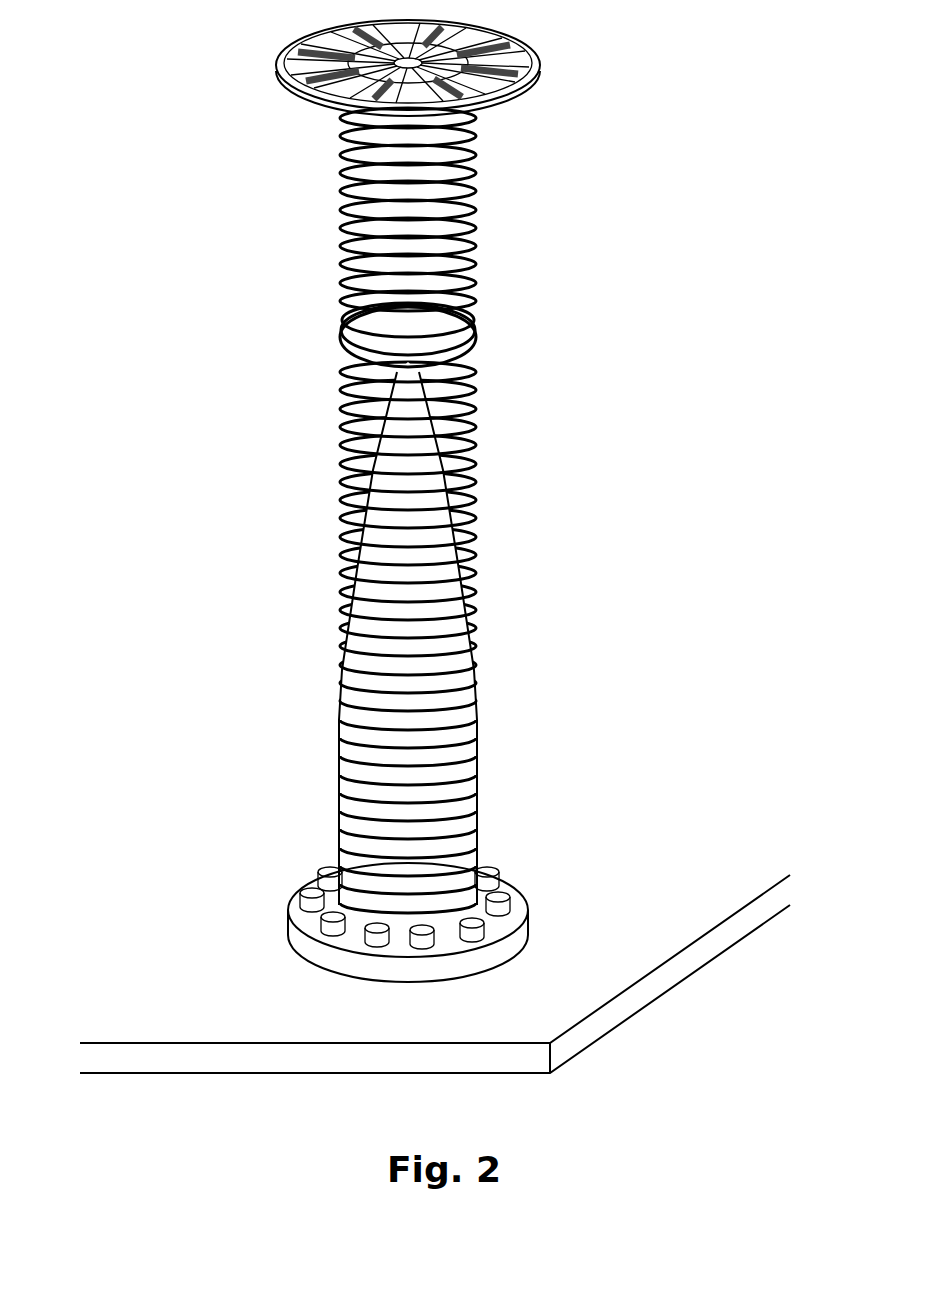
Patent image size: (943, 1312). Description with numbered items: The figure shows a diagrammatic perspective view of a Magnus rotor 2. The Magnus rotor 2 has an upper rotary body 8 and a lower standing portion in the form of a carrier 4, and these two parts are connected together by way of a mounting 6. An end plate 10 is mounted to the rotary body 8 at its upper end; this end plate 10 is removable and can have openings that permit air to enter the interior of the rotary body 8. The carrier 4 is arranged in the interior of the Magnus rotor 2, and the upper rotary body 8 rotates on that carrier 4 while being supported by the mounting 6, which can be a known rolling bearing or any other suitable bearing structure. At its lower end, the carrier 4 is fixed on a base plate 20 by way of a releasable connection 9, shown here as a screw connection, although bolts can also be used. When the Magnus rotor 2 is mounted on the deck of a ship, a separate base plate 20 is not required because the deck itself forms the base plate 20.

The Magnus rotor 2 is at (600, 144).
The carrier 4 is at (447, 593).
The mounting 6 is at (463, 345).
The rotary body 8 is at (318, 205).
The releasable connection 9 is at (490, 874).
The end plate 10 is at (275, 66).
The base plate 20 is at (160, 1011).